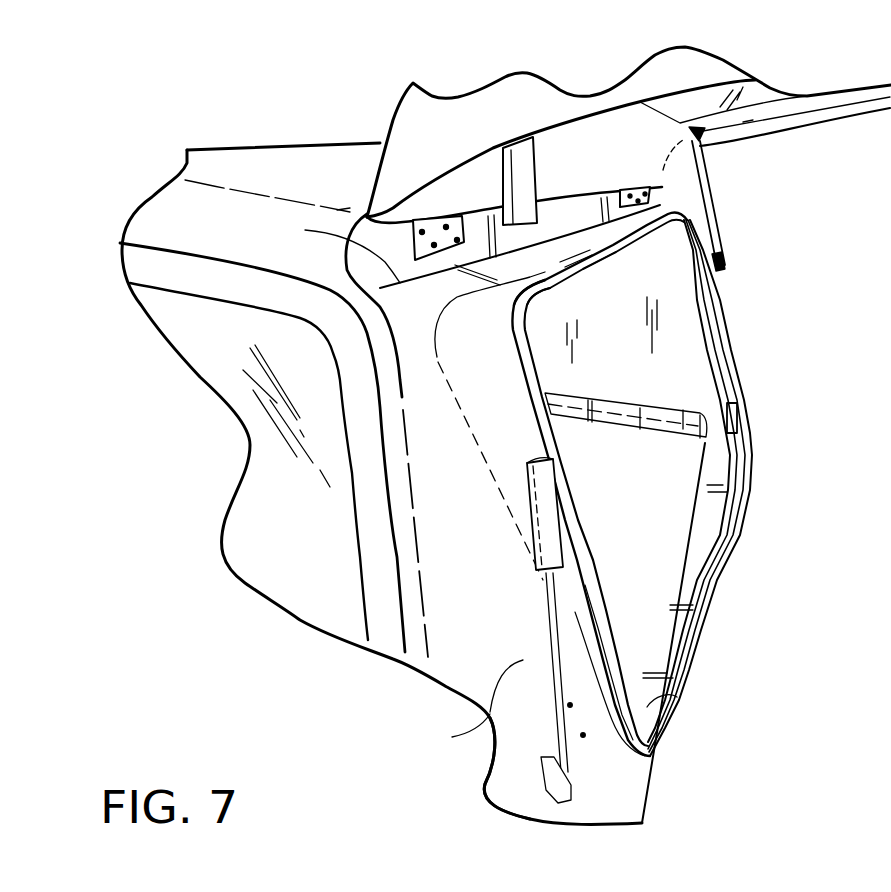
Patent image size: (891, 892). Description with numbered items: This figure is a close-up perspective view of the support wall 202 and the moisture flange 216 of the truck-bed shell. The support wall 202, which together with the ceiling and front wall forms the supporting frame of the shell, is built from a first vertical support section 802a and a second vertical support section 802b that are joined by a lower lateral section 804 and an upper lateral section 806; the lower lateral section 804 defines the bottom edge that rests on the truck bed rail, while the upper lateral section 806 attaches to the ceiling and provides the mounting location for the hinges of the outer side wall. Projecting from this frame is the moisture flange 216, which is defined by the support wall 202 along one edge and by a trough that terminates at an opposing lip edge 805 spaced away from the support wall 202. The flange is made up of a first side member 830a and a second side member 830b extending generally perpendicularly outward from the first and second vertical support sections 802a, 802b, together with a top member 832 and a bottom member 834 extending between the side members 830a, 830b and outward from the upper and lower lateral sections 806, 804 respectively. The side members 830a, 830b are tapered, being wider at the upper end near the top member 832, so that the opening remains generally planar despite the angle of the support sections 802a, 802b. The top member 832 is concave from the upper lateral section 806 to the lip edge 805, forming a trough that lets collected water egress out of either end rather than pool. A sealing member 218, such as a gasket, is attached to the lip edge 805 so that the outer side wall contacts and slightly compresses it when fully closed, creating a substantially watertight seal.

The support wall 202 is at (447, 487).
The upper lateral section 806 is at (576, 167).
The moisture flange 216 is at (700, 215).
The lip edge 805 is at (657, 222).
The second vertical support section 802b is at (700, 230).
The sealing member 218 is at (575, 492).
The top member 832 is at (540, 278).
The second side member 830b is at (762, 374).
The lower lateral section 804 is at (637, 777).
The first side member 830a is at (578, 623).
The bottom member 834 is at (677, 697).
The first vertical support section 802a is at (490, 714).